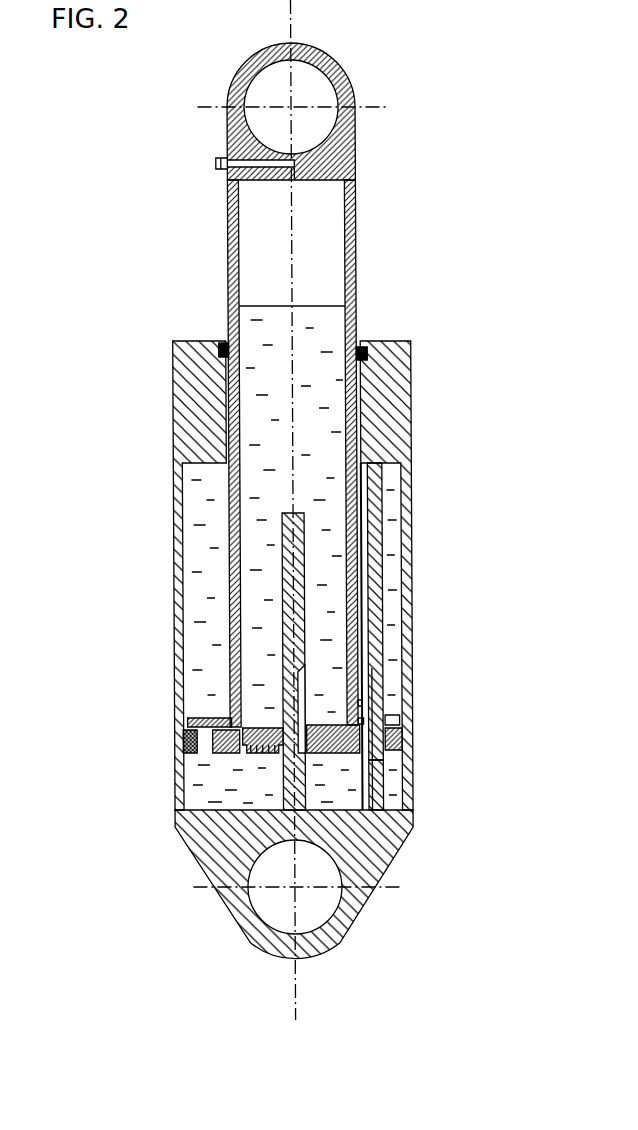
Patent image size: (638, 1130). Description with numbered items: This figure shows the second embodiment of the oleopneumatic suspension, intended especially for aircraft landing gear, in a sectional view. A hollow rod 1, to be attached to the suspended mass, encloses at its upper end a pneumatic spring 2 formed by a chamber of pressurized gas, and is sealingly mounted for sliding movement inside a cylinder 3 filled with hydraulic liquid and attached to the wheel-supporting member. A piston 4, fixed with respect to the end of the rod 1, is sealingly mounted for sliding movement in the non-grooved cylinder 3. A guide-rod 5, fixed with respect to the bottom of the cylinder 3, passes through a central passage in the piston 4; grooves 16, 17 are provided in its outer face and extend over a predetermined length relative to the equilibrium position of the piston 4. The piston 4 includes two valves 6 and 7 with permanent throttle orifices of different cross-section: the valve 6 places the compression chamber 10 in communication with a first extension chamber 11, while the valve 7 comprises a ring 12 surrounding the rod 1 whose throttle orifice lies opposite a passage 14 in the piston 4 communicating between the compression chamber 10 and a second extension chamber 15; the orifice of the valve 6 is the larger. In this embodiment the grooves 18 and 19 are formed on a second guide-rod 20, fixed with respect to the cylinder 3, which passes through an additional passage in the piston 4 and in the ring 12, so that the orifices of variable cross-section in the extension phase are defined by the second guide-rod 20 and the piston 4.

The hollow rod 1 is at (356, 262).
The pneumatic spring 2 is at (255, 251).
The cylinder 3 is at (410, 430).
The piston 4 is at (334, 753).
The guide-rod 5 is at (274, 548).
The valve 6 is at (258, 708).
The valve 7 is at (204, 706).
The compression chamber 10 is at (197, 793).
The first extension chamber 11 is at (299, 386).
The ring 12 is at (402, 722).
The passage 14 is at (184, 740).
The second extension chamber 15 is at (359, 481).
The groove 16 is at (300, 683).
The groove 17 is at (287, 793).
The groove 18 is at (367, 790).
The groove 19 is at (381, 682).
The second guide-rod 20 is at (373, 585).